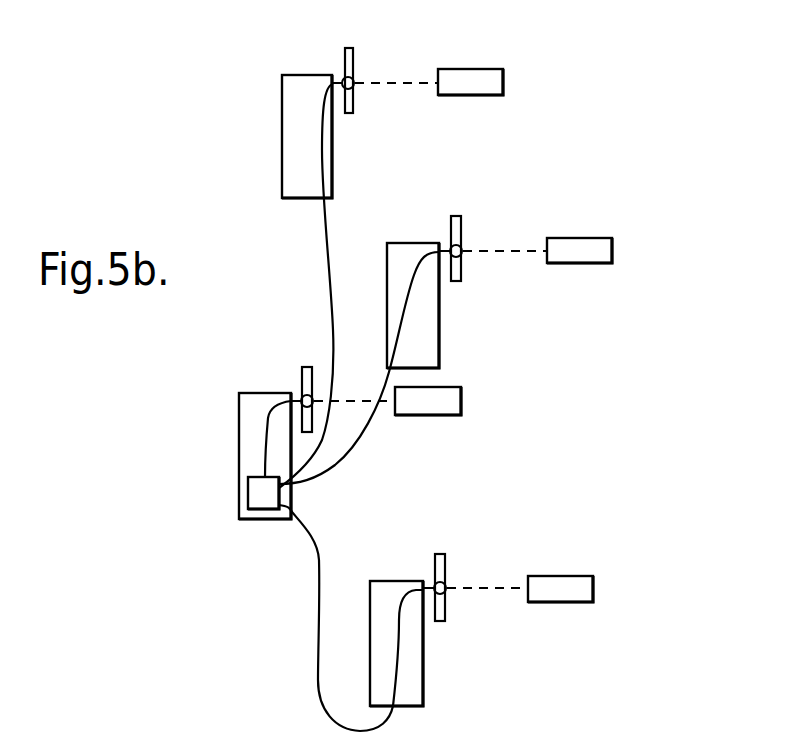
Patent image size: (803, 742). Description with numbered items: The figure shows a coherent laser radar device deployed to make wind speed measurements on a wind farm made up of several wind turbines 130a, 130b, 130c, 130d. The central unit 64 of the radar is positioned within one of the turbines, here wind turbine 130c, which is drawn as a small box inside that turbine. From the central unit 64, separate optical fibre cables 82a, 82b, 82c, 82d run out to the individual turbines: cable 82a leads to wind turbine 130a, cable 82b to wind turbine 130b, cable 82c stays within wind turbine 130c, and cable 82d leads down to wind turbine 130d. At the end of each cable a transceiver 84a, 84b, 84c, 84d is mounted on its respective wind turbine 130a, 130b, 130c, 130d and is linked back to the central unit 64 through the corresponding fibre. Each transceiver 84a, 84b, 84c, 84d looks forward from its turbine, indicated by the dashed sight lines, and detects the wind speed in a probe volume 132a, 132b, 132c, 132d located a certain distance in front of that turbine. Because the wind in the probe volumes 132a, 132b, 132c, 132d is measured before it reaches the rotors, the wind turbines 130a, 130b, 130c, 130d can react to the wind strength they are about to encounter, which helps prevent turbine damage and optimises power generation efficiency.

The central unit 64 is at (248, 492).
The optical fibre cable 82a is at (328, 238).
The optical fibre cable 82b is at (407, 300).
The optical fibre cable 82c is at (266, 441).
The optical fibre cable 82d is at (319, 638).
The transceiver 84a is at (393, 69).
The transceiver 84b is at (462, 250).
The transceiver 84c is at (303, 398).
The transceiver 84d is at (446, 587).
The wind turbine 130a is at (282, 135).
The wind turbine 130b is at (439, 331).
The wind turbine 130c is at (239, 407).
The wind turbine 130d is at (394, 581).
The probe volume 132a is at (503, 82).
The probe volume 132b is at (612, 250).
The probe volume 132c is at (461, 403).
The probe volume 132d is at (593, 588).